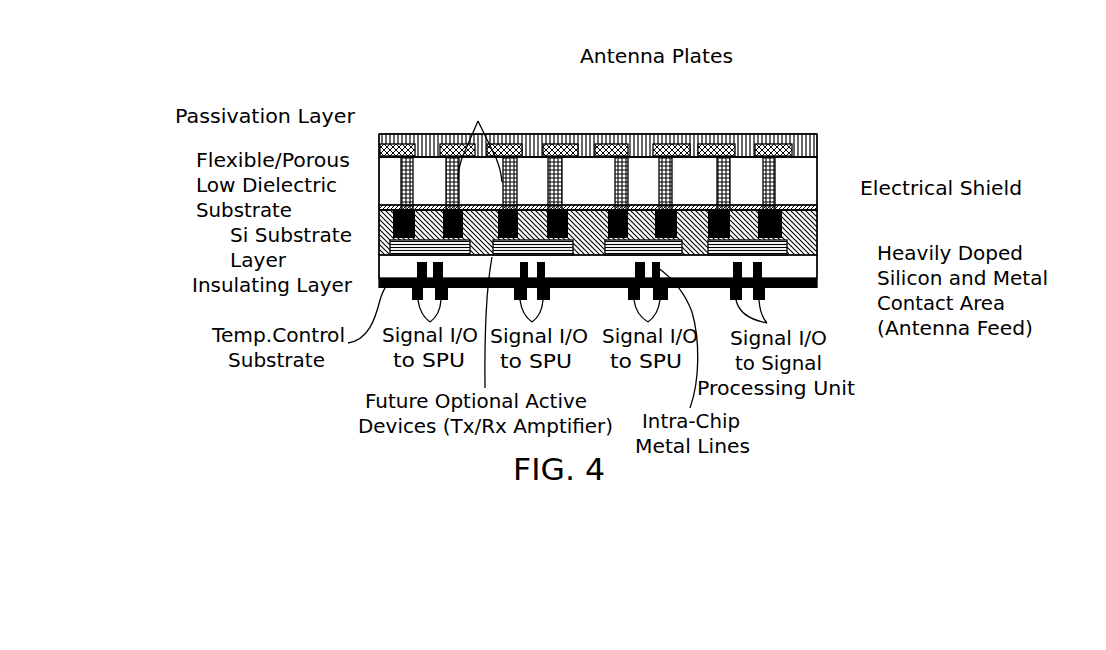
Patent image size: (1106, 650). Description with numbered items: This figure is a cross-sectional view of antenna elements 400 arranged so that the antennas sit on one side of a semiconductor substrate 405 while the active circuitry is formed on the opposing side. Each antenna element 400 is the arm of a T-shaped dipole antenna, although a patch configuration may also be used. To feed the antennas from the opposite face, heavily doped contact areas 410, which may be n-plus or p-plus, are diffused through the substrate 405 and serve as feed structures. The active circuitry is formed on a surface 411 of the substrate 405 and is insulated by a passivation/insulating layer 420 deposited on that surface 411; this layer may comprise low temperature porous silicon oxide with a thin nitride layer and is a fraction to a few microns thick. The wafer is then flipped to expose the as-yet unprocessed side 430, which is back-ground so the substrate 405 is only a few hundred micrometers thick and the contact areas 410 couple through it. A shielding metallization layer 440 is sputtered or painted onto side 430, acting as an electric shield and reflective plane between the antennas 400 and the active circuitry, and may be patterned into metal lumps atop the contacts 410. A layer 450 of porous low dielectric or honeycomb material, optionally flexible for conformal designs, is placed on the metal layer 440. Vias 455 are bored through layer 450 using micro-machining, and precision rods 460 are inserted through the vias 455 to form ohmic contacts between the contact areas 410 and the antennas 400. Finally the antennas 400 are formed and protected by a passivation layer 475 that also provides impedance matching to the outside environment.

The antenna elements 400 is at (640, 150).
The substrate 405 is at (383, 237).
The contact areas 410 is at (785, 223).
The surface 411 is at (805, 256).
The passivation/insulating layer 420 is at (378, 272).
The side 430 is at (815, 212).
The shielding metallization layer 440 is at (815, 207).
The layer of porous low dielectric material 450 is at (383, 185).
The vias 455 is at (780, 196).
The precision rods 460 is at (480, 139).
The passivation layer 475 is at (378, 135).